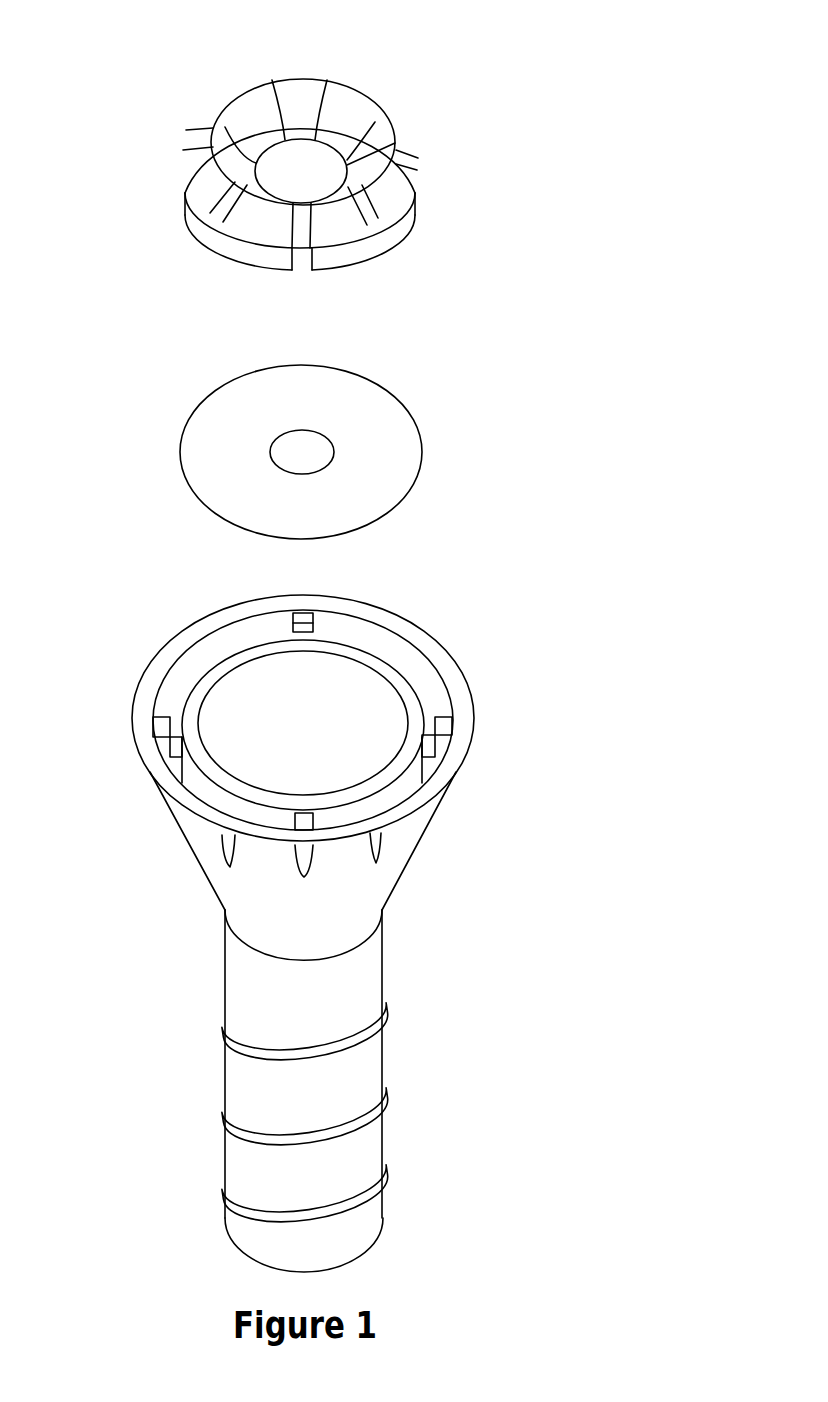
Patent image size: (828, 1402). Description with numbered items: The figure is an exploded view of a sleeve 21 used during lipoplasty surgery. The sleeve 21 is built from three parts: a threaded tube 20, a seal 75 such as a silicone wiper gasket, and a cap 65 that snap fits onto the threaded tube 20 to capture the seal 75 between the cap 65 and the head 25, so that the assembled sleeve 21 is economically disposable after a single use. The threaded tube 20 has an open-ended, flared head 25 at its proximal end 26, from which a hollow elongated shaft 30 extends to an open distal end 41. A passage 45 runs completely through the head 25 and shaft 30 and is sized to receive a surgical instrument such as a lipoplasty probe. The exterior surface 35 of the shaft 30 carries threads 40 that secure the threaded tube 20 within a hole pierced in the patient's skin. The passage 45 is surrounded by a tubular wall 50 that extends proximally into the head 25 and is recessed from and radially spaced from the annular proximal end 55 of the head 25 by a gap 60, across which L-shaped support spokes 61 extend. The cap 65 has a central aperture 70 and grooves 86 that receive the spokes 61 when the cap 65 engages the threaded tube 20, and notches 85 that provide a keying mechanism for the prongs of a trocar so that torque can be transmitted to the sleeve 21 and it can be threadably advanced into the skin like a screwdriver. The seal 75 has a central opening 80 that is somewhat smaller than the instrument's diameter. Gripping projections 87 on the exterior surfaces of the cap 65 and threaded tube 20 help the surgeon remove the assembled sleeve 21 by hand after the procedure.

The threaded tube 20 is at (543, 895).
The sleeve 21 is at (586, 74).
The flared head 25 is at (193, 852).
The proximal end 26 is at (125, 833).
The hollow elongated shaft 30 is at (383, 1037).
The exterior surface 35 is at (324, 1107).
The threads 40 is at (383, 1093).
The distal end 41 is at (324, 1257).
The passage 45 is at (321, 723).
The tubular wall 50 is at (237, 663).
The annular proximal end 55 is at (150, 682).
The gap 60 is at (398, 652).
The L-shaped support spokes 61 is at (445, 725).
The cap 65 is at (390, 46).
The central aperture 70 is at (318, 185).
The seal 75 is at (373, 382).
The central opening 80 is at (318, 466).
The notches 85 is at (290, 88).
The grooves 86 is at (302, 268).
The gripping projections 87 is at (413, 170).